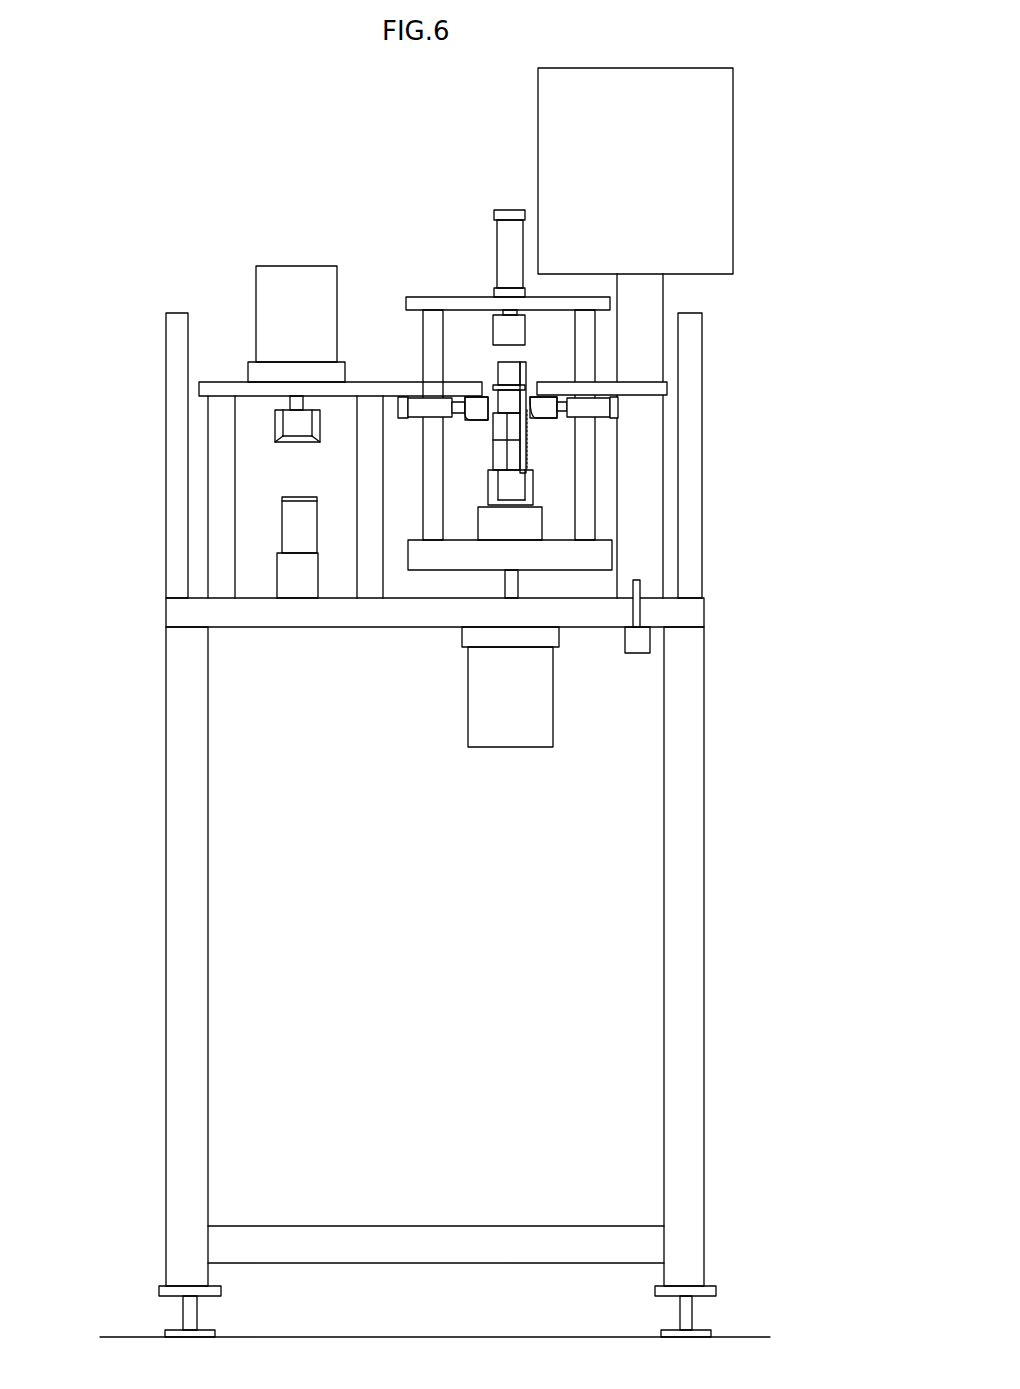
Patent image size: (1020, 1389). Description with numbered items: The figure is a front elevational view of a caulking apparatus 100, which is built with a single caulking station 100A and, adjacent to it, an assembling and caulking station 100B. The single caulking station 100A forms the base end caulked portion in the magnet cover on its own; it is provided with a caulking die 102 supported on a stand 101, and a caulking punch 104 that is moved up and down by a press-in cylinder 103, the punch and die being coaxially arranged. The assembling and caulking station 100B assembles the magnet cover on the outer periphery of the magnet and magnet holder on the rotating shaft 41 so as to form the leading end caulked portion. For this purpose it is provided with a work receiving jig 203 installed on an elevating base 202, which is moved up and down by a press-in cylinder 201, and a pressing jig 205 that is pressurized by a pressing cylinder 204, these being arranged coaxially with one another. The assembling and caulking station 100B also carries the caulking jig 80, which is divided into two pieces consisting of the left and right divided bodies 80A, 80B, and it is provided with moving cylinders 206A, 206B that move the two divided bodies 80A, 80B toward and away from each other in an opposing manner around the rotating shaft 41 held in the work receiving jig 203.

The caulking apparatus 100 is at (221, 192).
The single caulking station 100A is at (300, 266).
The assembling and caulking station 100B is at (484, 203).
The stand 101 is at (268, 620).
The caulking die 102 is at (283, 532).
The press-in cylinder 103 is at (256, 296).
The caulking punch 104 is at (275, 430).
The press-in cylinder 201 is at (512, 748).
The elevating base 202 is at (600, 555).
The work receiving jig 203 is at (530, 490).
The pressing cylinder 204 is at (497, 240).
The pressing jig 205 is at (503, 327).
The moving cylinder 206A is at (415, 405).
The moving cylinder 206B is at (602, 407).
The caulking jig 80 is at (470, 403).
The divided body 80A is at (470, 421).
The divided body 80B is at (543, 420).
The rotating shaft 41 is at (527, 365).